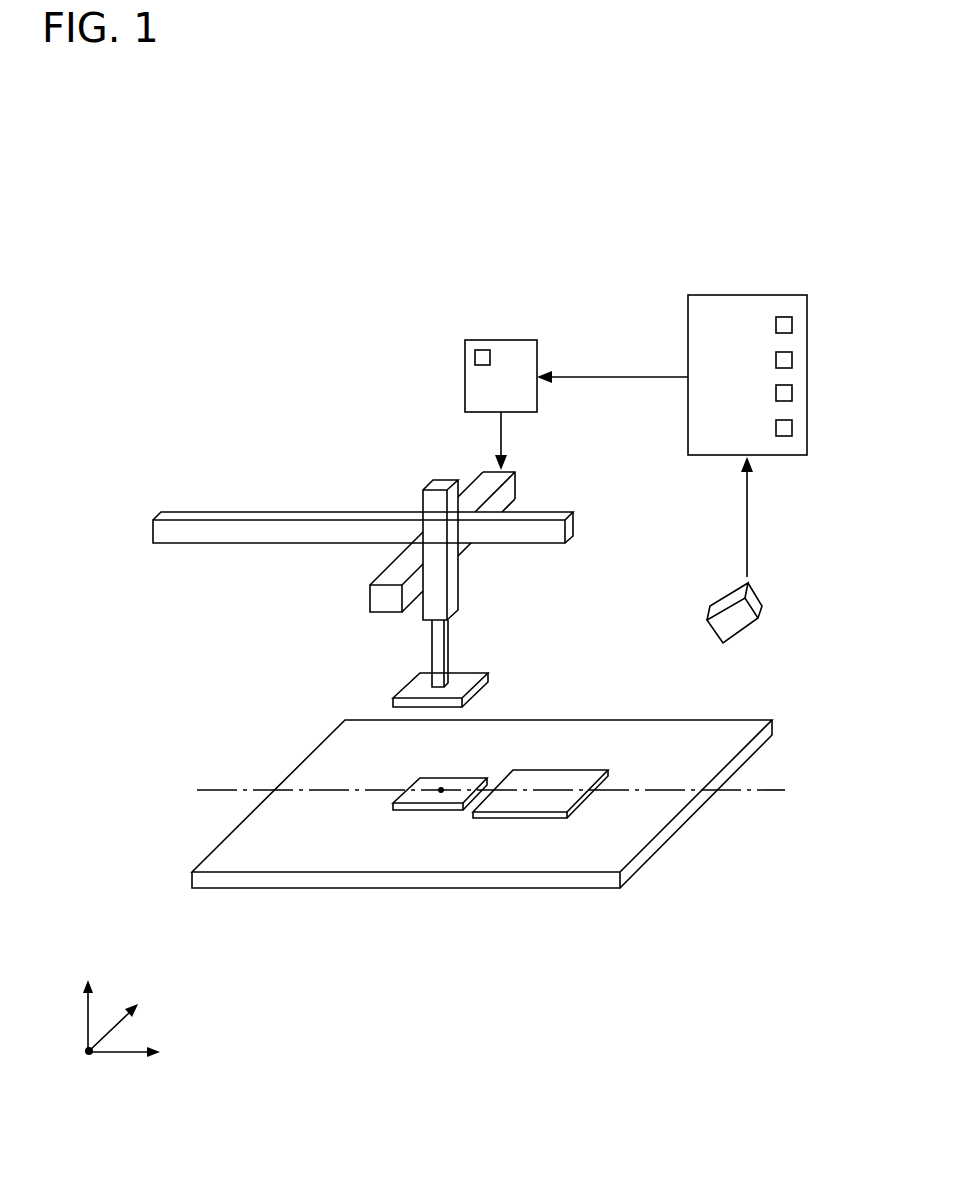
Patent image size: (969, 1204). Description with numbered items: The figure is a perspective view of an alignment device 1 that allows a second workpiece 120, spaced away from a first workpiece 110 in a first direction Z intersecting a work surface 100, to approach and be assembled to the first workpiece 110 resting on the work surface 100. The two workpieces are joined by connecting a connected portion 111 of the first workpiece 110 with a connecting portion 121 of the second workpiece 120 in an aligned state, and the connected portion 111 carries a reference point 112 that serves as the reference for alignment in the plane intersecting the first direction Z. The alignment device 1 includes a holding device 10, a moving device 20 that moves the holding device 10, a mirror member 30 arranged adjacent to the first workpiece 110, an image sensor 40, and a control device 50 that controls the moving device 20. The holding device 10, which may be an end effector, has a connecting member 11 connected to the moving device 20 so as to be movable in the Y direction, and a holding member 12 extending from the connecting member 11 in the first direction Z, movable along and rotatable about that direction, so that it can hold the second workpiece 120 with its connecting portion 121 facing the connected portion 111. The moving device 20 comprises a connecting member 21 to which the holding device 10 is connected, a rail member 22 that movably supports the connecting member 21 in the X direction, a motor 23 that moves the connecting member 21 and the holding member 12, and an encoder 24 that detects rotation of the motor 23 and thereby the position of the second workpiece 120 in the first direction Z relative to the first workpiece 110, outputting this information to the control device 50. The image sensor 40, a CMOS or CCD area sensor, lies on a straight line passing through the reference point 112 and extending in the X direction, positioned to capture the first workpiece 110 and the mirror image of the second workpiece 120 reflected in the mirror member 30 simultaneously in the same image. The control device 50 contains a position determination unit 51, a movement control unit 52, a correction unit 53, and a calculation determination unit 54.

The alignment device 1 is at (757, 218).
The holding device 10 is at (518, 558).
The connecting member 11 is at (452, 572).
The holding member 12 is at (440, 642).
The moving device 20 is at (298, 495).
The connecting member 21 is at (388, 568).
The rail member 22 is at (265, 538).
The motor 23 is at (499, 340).
The encoder 24 is at (475, 357).
The mirror member 30 is at (530, 813).
The image sensor 40 is at (745, 630).
The control device 50 is at (787, 295).
The position determination unit 51 is at (792, 325).
The movement control unit 52 is at (792, 360).
The correction unit 53 is at (792, 393).
The calculation determination unit 54 is at (792, 428).
The work surface 100 is at (647, 827).
The first workpiece 110 is at (428, 831).
The connected portion 111 is at (426, 787).
The reference point 112 is at (441, 790).
The second workpiece 120 is at (480, 672).
The connecting portion 121 is at (445, 708).